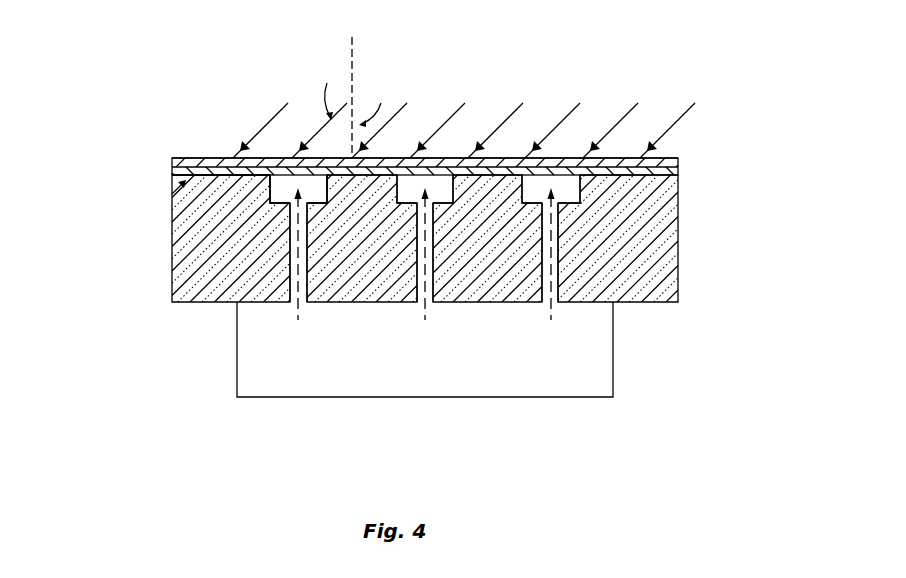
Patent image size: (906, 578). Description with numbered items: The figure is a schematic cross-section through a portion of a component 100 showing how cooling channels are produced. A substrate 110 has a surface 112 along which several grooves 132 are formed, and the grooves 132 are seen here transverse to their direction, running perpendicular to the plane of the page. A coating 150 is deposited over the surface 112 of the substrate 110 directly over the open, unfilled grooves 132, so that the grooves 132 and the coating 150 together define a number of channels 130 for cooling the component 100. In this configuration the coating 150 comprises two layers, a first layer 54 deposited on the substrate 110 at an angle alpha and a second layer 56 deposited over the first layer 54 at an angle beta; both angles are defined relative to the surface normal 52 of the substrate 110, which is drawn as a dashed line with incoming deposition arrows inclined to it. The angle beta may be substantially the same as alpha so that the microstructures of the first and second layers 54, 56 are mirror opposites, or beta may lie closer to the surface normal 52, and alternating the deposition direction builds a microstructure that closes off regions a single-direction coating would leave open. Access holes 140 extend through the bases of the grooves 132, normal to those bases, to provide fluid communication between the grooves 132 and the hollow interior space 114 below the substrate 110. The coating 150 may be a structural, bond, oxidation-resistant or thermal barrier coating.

The component 100 is at (116, 52).
The surface normal 52 is at (352, 64).
The first layer 54 is at (678, 170).
The second layer 56 is at (678, 160).
The substrate 110 is at (663, 253).
The surface 112 is at (172, 194).
The hollow interior space 114 is at (613, 345).
The channel 130 is at (268, 183).
The groove 132 is at (197, 236).
The access hole 140 is at (307, 295).
The coating 150 is at (153, 177).